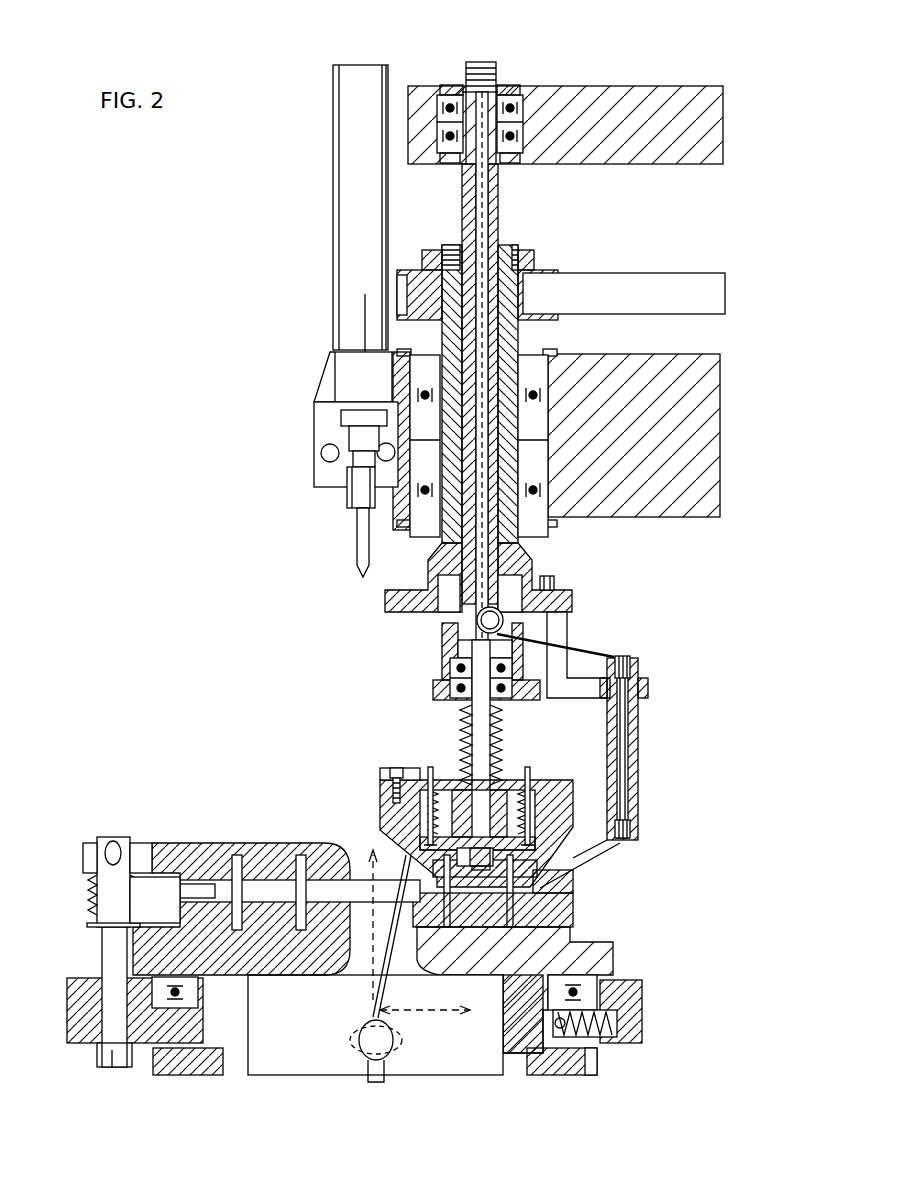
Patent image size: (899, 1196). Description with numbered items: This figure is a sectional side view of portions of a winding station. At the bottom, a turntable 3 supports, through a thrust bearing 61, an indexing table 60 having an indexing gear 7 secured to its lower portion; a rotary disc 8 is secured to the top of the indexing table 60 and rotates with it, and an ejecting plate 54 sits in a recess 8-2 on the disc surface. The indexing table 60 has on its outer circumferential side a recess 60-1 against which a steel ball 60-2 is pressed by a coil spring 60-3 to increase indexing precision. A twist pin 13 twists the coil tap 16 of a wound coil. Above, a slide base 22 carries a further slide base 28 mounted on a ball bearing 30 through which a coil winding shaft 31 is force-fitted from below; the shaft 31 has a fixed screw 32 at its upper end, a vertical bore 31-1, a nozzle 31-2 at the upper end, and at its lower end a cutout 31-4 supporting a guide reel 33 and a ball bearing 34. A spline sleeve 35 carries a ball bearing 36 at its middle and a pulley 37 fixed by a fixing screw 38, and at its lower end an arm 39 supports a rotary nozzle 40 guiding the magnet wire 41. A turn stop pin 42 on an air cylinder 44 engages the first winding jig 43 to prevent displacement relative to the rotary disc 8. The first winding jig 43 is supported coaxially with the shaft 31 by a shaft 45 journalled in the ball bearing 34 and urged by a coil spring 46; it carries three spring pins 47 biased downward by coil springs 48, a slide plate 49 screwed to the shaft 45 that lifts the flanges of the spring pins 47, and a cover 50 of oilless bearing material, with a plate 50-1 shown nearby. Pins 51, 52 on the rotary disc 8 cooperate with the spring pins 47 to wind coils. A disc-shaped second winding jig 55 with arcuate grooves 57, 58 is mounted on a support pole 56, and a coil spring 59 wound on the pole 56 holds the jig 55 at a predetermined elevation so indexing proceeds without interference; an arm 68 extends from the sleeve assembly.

The turntable 3 is at (70, 992).
The indexing gear 7 is at (215, 1052).
The rotary disc 8 is at (560, 912).
The recess 8-2 is at (560, 884).
The twist pin 13 is at (360, 1034).
The coil tap 16 is at (380, 992).
The slide base 22 is at (678, 362).
The slide base 28 is at (680, 96).
The ball bearing 30 is at (523, 110).
The coil winding shaft 31 is at (462, 196).
The vertical bore 31-1 is at (518, 205).
The nozzle 31-2 is at (488, 64).
The cutout 31-4 is at (512, 696).
The fixed screw 32 is at (462, 86).
The guide reel 33 is at (528, 600).
The ball bearing 34 is at (436, 680).
The spline sleeve 35 is at (422, 584).
The ball bearing 36 is at (548, 354).
The pulley 37 is at (543, 272).
The fixing screw 38 is at (525, 250).
The arm 39 is at (568, 636).
The rotary nozzle 40 is at (638, 770).
The magnet wire 41 is at (612, 656).
The turn stop pin 42 is at (350, 546).
The first winding jig 43 is at (385, 832).
The air cylinder 44 is at (333, 226).
The shaft 45 is at (460, 724).
The coil spring 46 is at (460, 748).
The spring pins 47 is at (526, 782).
The coil springs 48 is at (540, 798).
The slide plate 49 is at (535, 848).
The cover 50 is at (396, 770).
The mounting plate 50-1 is at (385, 776).
The pins 51 is at (300, 934).
The pins 52 is at (232, 934).
The ejecting plate 54 is at (220, 884).
The second winding jig 55 is at (166, 852).
The support pole 56 is at (104, 848).
The arcuate groove 57 is at (300, 854).
The arcuate groove 58 is at (238, 854).
The coil spring 59 is at (140, 885).
The indexing table 60 is at (612, 956).
The recess 60-1 is at (540, 1040).
The steel ball 60-2 is at (553, 1020).
The coil spring 60-3 is at (614, 1046).
The thrust bearing 61 is at (563, 976).
The arm 68 is at (684, 284).